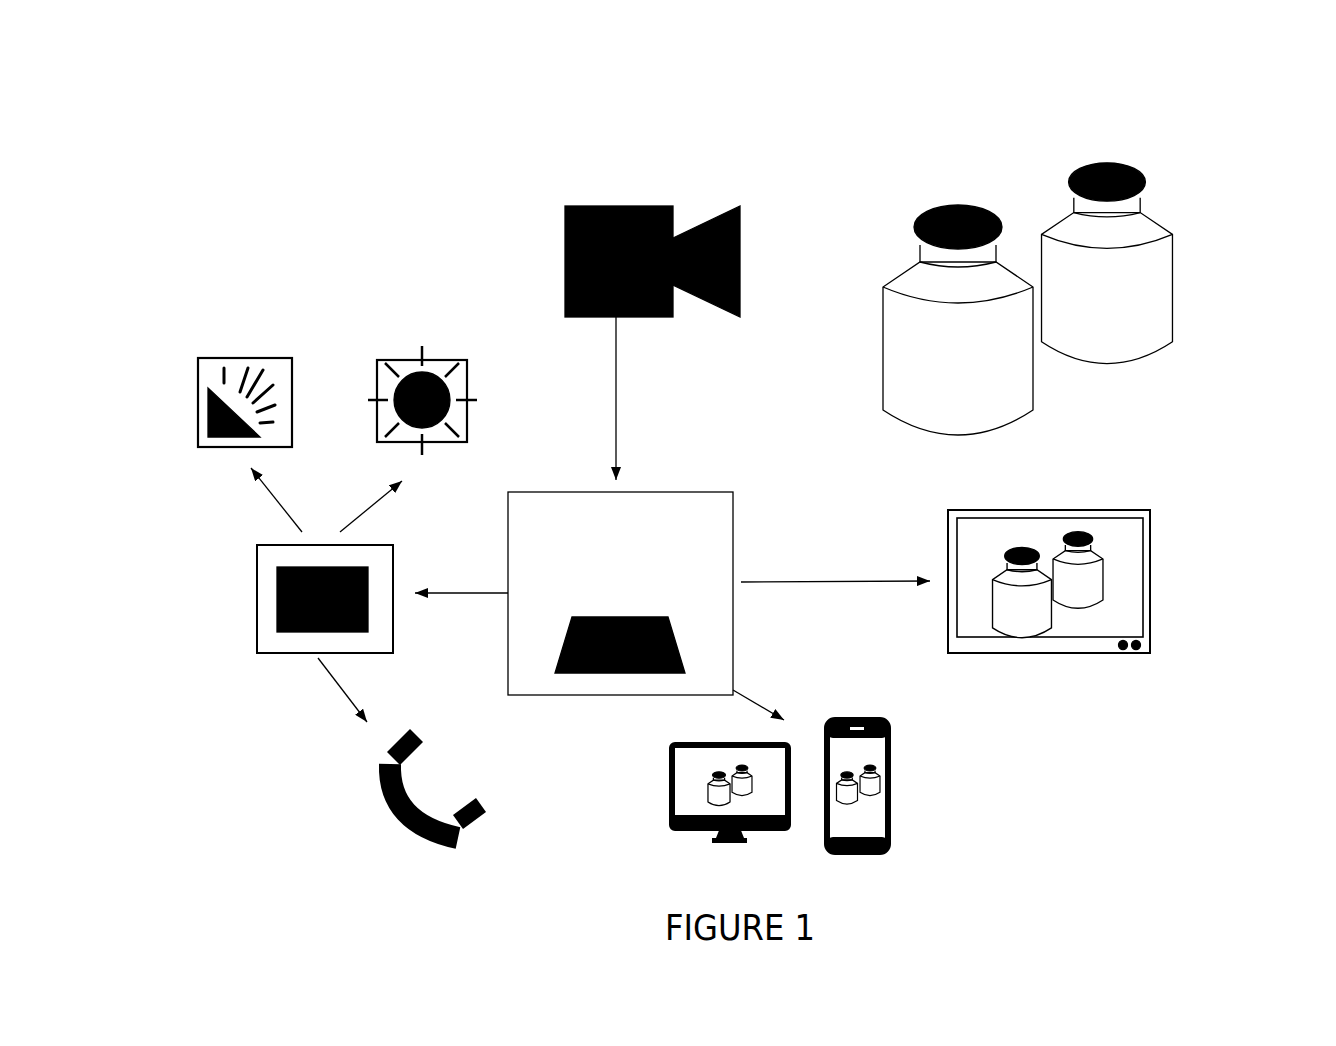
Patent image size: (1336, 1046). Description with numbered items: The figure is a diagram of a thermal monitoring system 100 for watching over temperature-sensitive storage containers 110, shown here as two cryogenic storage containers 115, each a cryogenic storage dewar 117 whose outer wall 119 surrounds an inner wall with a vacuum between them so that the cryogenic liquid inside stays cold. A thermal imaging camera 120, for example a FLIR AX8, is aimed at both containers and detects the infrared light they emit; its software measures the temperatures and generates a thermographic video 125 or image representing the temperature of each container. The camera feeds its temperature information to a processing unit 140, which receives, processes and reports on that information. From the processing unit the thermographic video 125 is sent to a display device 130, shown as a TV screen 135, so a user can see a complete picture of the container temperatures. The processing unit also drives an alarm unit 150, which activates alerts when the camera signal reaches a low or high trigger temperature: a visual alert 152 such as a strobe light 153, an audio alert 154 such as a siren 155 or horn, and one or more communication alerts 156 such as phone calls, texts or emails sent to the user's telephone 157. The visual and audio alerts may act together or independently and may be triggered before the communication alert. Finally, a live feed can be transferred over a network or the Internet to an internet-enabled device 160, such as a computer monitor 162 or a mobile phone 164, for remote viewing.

The thermal monitoring system 100 is at (448, 207).
The temperature-sensitive storage container 110 is at (976, 152).
The cryogenic storage container 115 is at (1052, 243).
The cryogenic storage dewar 117 is at (1030, 128).
The outer wall 119 is at (1152, 298).
The thermal imaging camera 120 is at (597, 206).
The thermographic video 125 is at (1037, 532).
The display device 130 is at (1180, 576).
The TV screen 135 is at (1121, 554).
The processing unit 140 is at (732, 480).
The alarm unit 150 is at (212, 604).
The visual alert 152 is at (168, 388).
The strobe light 153 is at (215, 422).
The audio alert 154 is at (350, 344).
The siren 155 is at (420, 377).
The communication alert 156 is at (360, 814).
The telephone 157 is at (418, 833).
The internet-enabled device 160 is at (920, 779).
The computer monitor 162 is at (692, 795).
The mobile phone 164 is at (872, 817).